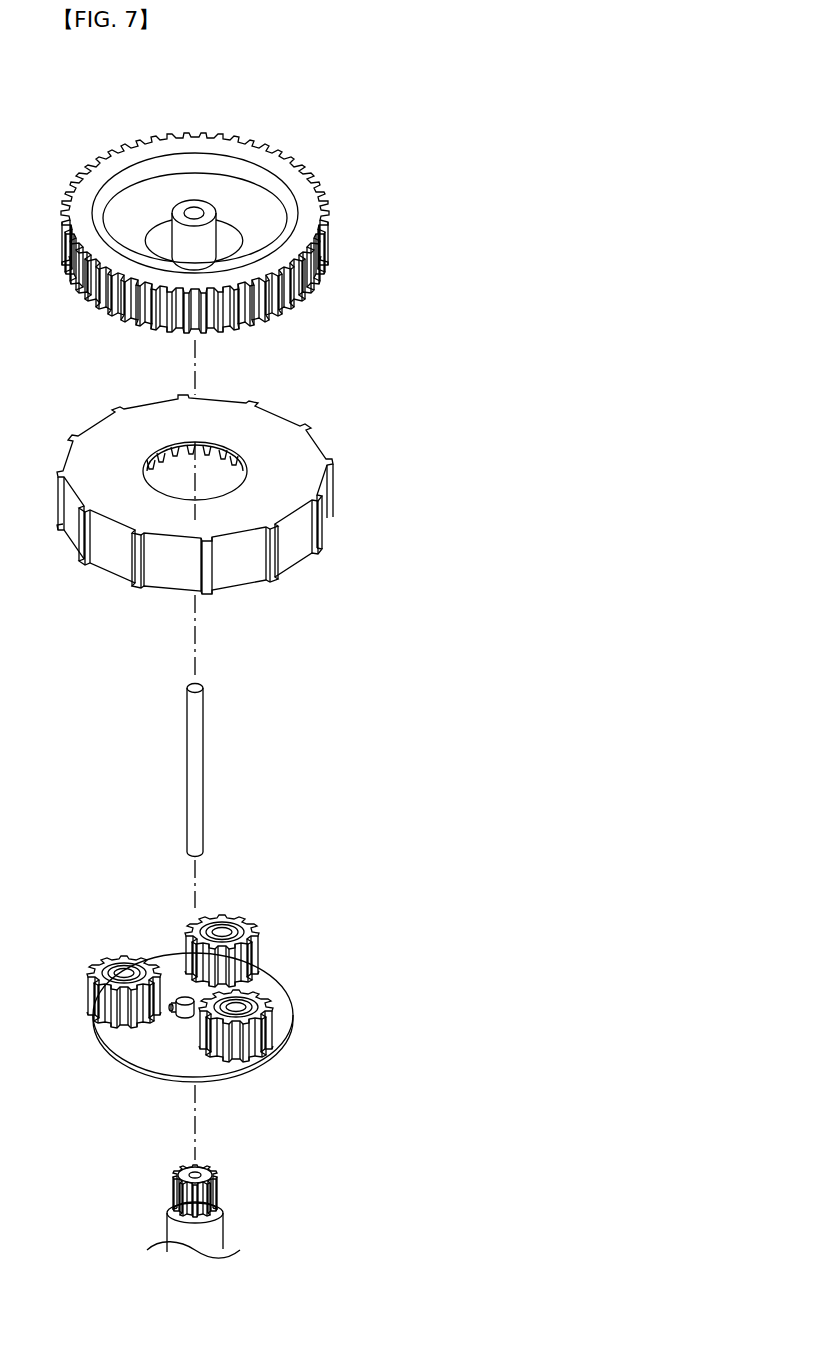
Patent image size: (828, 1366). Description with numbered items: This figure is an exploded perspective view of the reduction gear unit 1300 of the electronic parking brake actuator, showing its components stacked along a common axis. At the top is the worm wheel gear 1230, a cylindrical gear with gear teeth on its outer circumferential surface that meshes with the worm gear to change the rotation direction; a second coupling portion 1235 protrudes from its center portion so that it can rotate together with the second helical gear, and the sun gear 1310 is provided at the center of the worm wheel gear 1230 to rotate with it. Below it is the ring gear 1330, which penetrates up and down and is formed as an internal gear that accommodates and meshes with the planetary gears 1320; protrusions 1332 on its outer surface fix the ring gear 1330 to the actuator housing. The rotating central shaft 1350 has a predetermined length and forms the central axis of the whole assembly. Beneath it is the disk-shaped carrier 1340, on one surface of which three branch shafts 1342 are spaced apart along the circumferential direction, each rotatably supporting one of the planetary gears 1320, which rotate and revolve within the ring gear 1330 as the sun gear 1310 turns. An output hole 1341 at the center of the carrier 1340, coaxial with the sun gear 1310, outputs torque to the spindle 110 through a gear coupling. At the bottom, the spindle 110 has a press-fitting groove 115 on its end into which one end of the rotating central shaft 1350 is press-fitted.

The reduction gear unit 1300 is at (486, 111).
The worm wheel gear 1230 is at (361, 205).
The second coupling portion 1235 is at (208, 207).
The sun gear 1310 is at (240, 318).
The ring gear 1330 is at (347, 480).
The protrusions 1332 is at (313, 540).
The rotating central shaft 1350 is at (199, 720).
The carrier 1340 is at (280, 1015).
The output hole 1341 is at (176, 1016).
The planetary gears 1320 is at (263, 1000).
The branch shafts 1342 is at (222, 932).
The press-fitting groove 115 is at (200, 1175).
The spindle 110 is at (216, 1228).